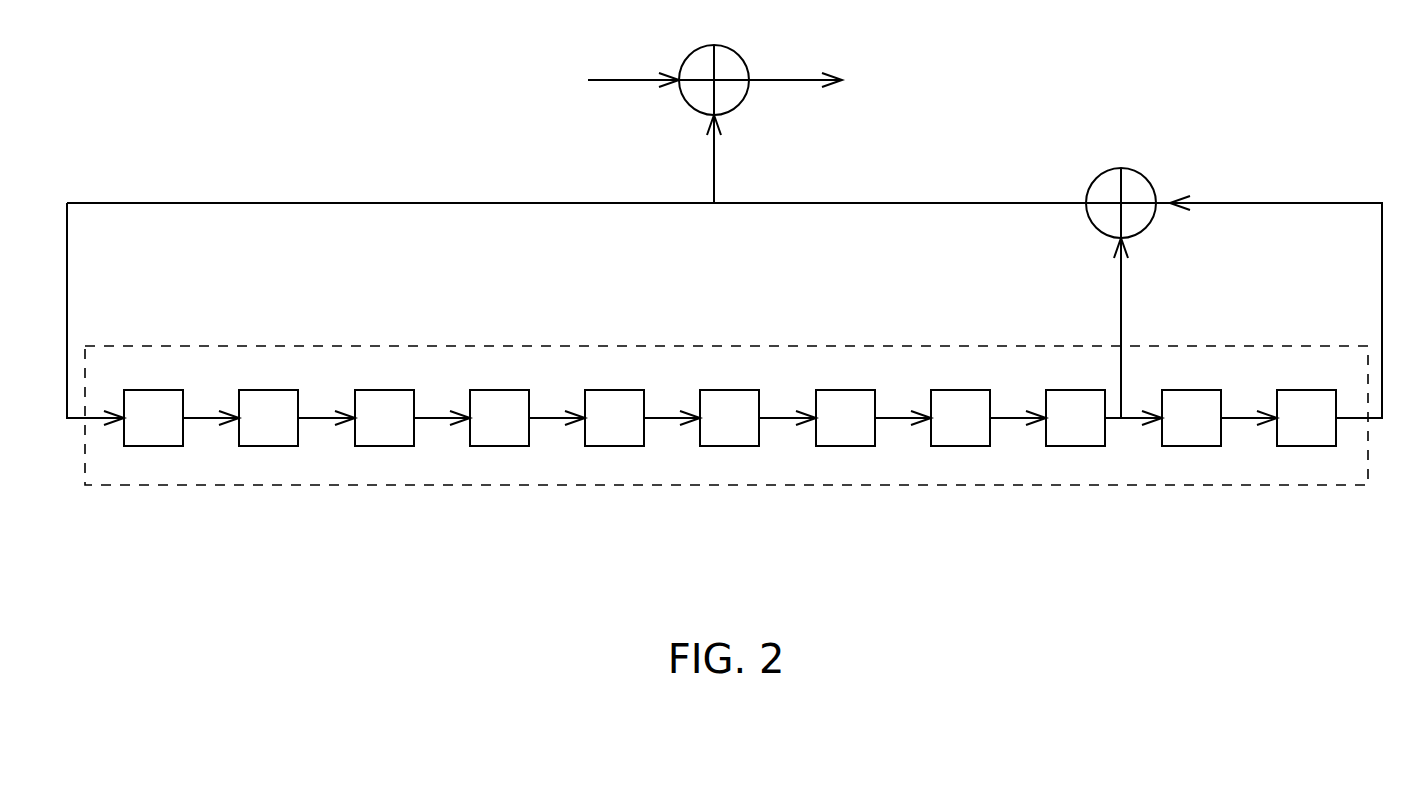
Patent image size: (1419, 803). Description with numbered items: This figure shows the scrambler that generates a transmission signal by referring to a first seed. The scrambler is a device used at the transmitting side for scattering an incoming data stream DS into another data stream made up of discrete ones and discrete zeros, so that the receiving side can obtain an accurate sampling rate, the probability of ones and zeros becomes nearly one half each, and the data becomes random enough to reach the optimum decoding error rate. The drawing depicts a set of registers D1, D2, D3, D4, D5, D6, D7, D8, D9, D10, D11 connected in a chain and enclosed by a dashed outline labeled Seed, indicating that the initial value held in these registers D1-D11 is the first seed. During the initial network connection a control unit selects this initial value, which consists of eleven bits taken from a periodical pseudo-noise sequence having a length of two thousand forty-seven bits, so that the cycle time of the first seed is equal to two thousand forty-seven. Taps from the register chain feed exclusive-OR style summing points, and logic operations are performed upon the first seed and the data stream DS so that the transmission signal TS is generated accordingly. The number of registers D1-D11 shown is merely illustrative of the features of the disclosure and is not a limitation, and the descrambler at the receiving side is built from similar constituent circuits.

The register D1 is at (153, 418).
The register D2 is at (268, 418).
The register D3 is at (384, 418).
The register D4 is at (499, 418).
The register D5 is at (614, 418).
The register D6 is at (729, 418).
The register D7 is at (845, 418).
The register D8 is at (960, 418).
The register D9 is at (1075, 418).
The register D10 is at (1191, 418).
The register D11 is at (1306, 418).
The data stream DS is at (560, 81).
The transmission signal TS is at (869, 81).
The seed Seed is at (708, 486).